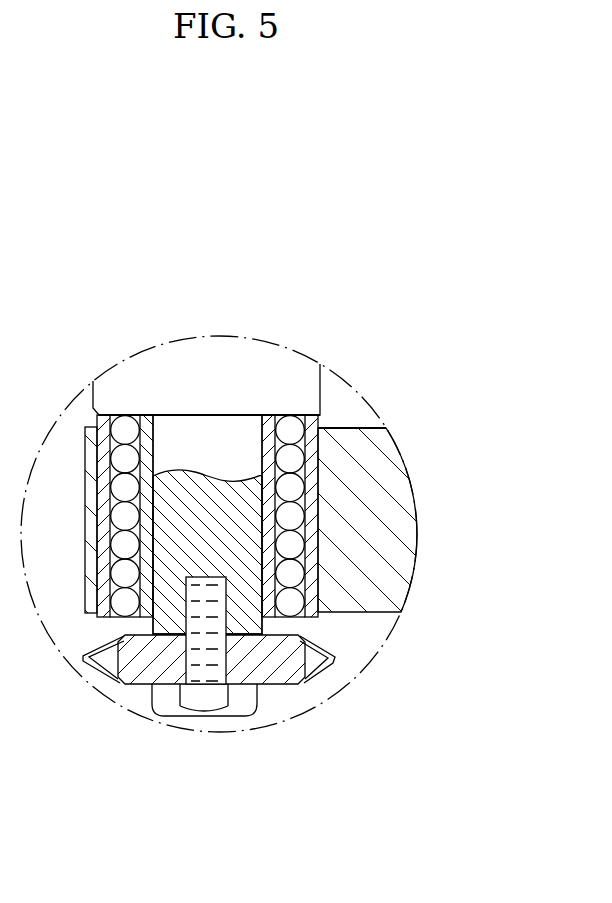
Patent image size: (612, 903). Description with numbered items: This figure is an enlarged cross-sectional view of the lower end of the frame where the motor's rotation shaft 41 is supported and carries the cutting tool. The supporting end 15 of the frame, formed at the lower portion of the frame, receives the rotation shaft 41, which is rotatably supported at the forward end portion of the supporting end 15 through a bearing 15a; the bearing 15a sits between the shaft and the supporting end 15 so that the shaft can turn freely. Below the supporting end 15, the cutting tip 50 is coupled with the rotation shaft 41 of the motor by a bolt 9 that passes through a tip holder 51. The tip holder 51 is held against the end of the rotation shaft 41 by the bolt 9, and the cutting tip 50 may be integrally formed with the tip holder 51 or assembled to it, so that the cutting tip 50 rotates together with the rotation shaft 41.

The supporting end 15 is at (359, 452).
The bearing 15a is at (285, 427).
The rotation shaft 41 is at (183, 428).
The tip holder 51 is at (280, 670).
The cutting tip 50 is at (103, 658).
The bolt 9 is at (214, 702).